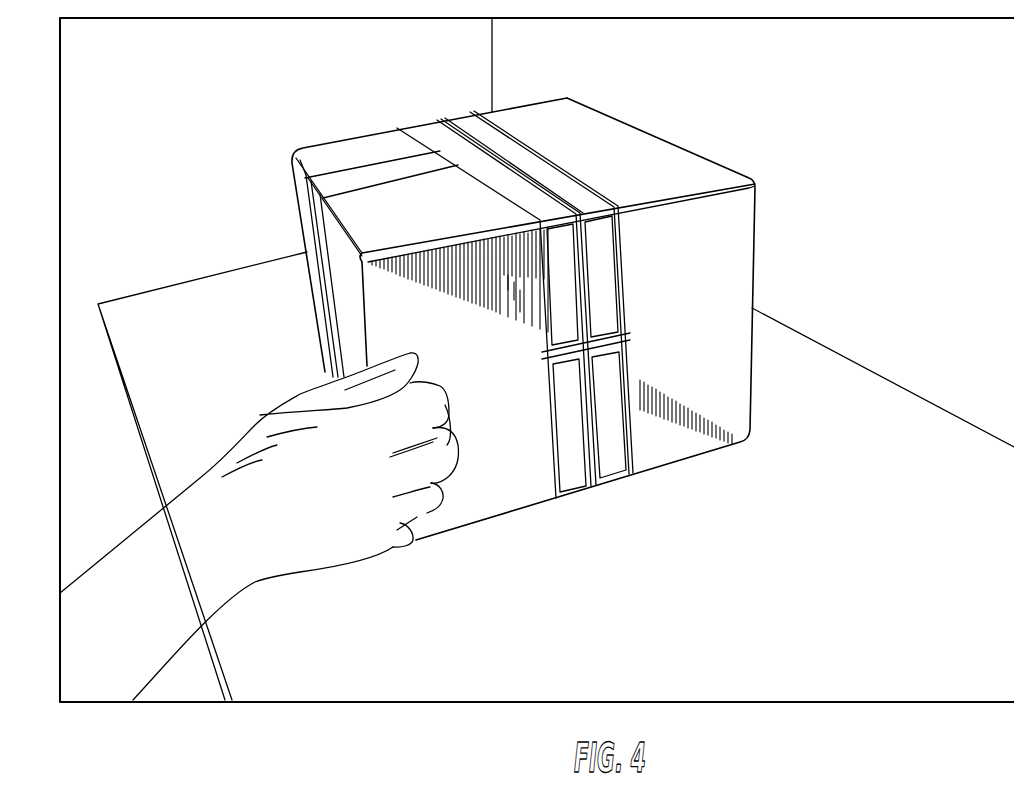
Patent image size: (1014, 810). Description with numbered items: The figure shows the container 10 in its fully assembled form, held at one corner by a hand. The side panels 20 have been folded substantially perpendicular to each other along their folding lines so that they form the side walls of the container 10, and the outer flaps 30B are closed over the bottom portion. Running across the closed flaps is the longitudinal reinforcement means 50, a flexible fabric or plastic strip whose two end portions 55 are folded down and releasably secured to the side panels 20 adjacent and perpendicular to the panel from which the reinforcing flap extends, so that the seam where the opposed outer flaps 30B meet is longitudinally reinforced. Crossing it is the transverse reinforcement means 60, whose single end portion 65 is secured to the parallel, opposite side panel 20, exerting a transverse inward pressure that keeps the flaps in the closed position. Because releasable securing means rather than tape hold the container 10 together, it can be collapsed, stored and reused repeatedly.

The container 10 is at (668, 113).
The side panel 20 is at (720, 345).
The outer flap 30B is at (447, 222).
The longitudinal reinforcement means 50 is at (525, 173).
The end portion 55 is at (585, 286).
The transverse reinforcement means 60 is at (348, 187).
The end portion 65 is at (335, 363).